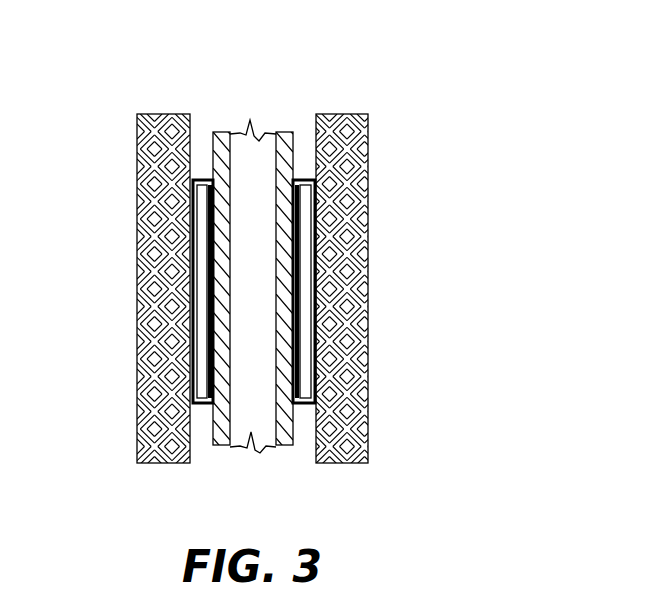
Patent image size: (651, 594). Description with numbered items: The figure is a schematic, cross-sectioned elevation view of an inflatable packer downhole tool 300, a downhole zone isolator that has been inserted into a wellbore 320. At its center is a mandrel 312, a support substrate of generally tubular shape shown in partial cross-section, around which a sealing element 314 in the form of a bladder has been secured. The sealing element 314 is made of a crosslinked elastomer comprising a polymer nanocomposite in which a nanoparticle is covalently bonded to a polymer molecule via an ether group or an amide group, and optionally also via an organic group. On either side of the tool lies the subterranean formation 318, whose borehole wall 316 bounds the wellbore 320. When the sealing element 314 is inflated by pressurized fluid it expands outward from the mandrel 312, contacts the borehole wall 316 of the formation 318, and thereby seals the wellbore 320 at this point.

The downhole tool 300 is at (283, 118).
The mandrel 312 is at (215, 438).
The sealing element 314 is at (299, 405).
The borehole wall 316 is at (193, 131).
The subterranean formation 318 is at (168, 236).
The wellbore 320 is at (305, 155).